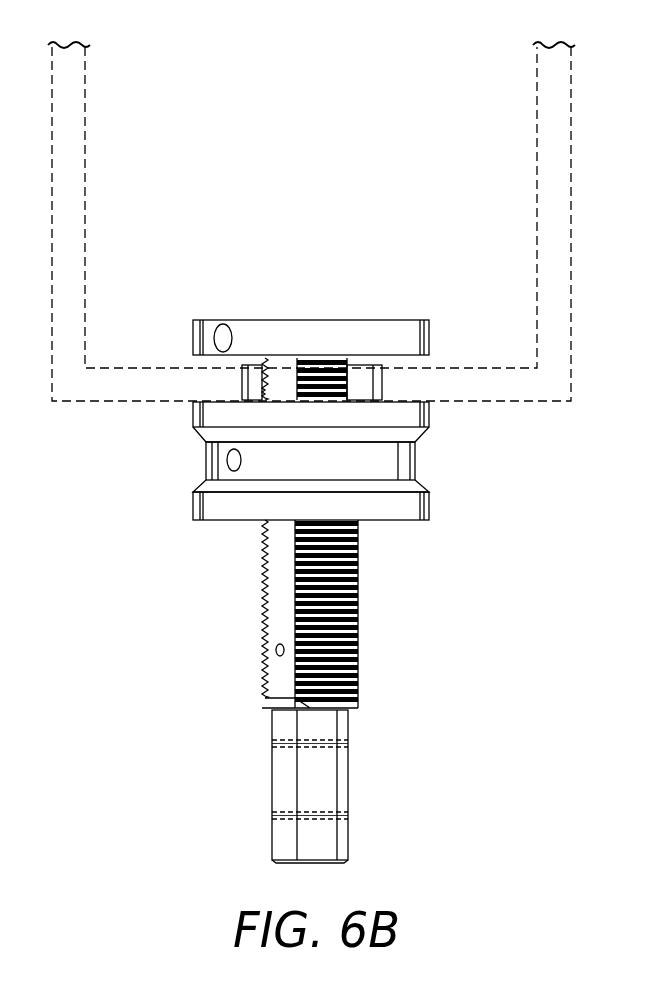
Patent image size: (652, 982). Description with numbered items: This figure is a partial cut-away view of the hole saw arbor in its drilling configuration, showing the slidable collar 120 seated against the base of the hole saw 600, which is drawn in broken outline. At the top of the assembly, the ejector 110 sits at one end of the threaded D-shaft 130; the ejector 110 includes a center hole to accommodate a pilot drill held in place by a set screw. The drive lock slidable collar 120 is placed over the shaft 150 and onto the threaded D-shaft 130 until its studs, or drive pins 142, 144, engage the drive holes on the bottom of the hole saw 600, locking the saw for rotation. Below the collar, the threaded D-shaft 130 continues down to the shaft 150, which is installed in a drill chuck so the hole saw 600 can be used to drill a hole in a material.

The hole saw 600 is at (571, 185).
The ejector 110 is at (429, 339).
The drive lock slidable collar 120 is at (429, 420).
The threaded D-shaft 130 is at (358, 612).
The drive pin 142 is at (382, 383).
The drive pin 144 is at (242, 382).
The shaft 150 is at (348, 785).